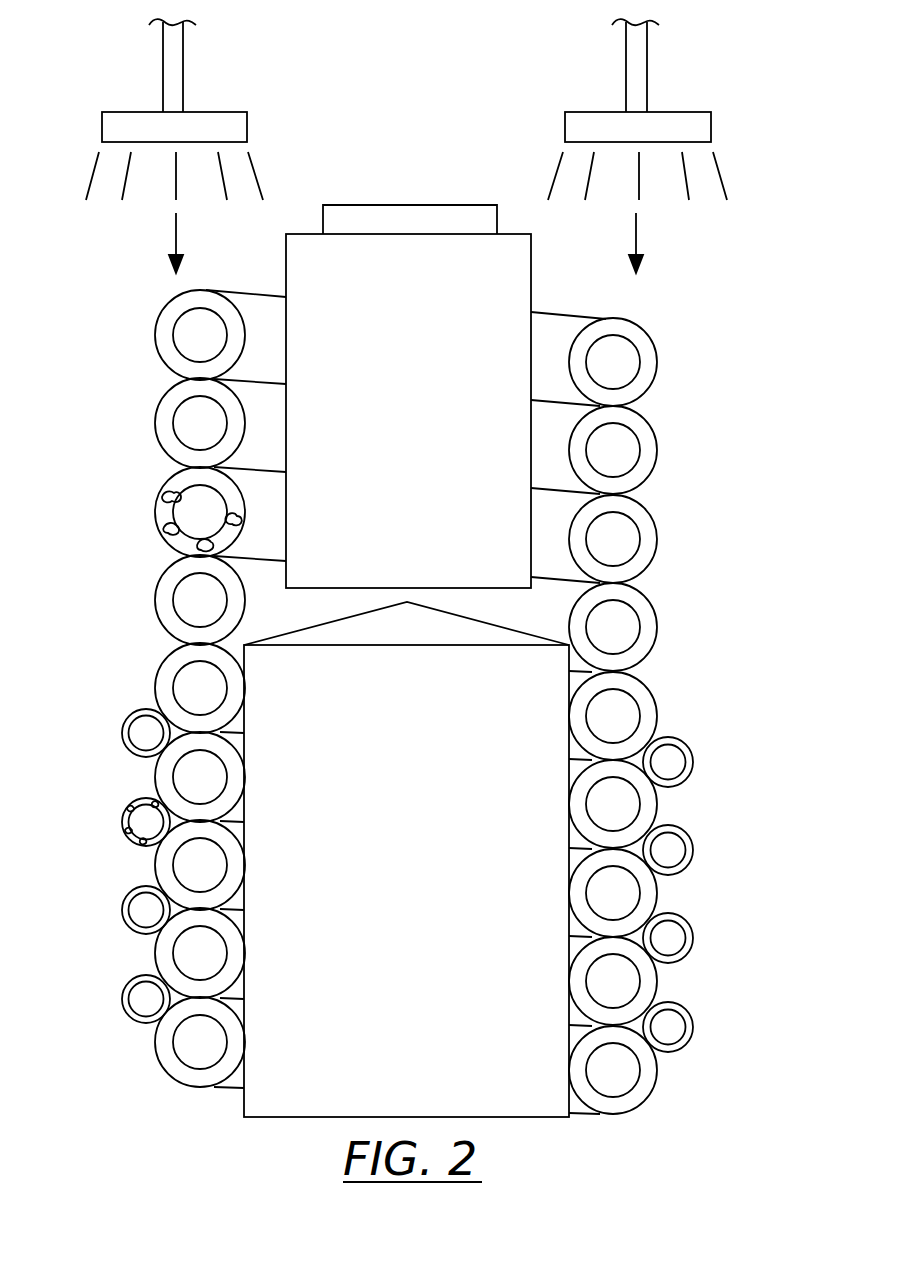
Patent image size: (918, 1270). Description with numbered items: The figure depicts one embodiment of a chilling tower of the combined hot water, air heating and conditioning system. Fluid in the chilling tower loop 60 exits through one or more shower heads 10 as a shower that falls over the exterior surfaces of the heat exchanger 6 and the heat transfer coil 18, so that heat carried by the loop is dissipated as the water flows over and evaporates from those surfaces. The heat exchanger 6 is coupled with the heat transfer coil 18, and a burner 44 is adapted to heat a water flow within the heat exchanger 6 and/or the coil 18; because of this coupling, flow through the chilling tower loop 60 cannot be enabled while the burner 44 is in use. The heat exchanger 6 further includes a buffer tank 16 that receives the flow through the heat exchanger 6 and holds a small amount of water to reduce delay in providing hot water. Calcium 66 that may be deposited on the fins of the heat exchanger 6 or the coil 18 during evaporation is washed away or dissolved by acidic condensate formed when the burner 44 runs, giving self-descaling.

The chilling tower loop 60 is at (163, 55).
The shower heads 10 is at (102, 122).
The burner 44 is at (286, 254).
The heat exchanger 6 is at (157, 420).
The calcium 66 is at (160, 495).
The heat transfer coil 18 is at (122, 727).
The buffer tank 16 is at (244, 1100).